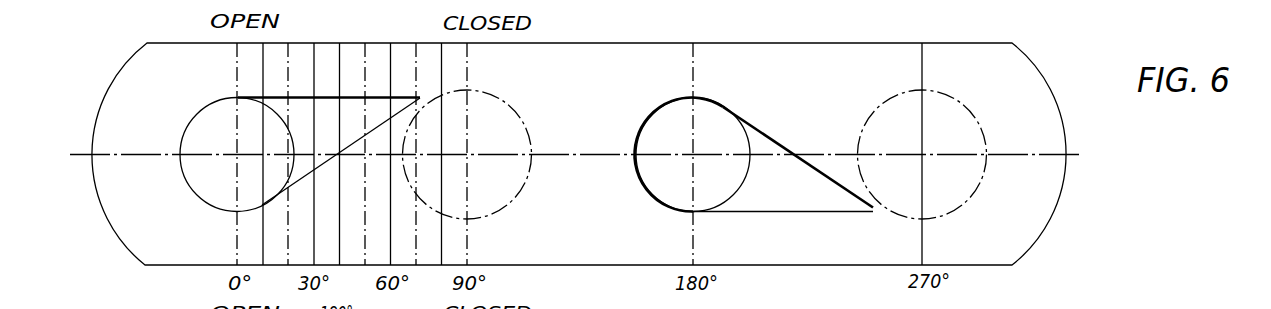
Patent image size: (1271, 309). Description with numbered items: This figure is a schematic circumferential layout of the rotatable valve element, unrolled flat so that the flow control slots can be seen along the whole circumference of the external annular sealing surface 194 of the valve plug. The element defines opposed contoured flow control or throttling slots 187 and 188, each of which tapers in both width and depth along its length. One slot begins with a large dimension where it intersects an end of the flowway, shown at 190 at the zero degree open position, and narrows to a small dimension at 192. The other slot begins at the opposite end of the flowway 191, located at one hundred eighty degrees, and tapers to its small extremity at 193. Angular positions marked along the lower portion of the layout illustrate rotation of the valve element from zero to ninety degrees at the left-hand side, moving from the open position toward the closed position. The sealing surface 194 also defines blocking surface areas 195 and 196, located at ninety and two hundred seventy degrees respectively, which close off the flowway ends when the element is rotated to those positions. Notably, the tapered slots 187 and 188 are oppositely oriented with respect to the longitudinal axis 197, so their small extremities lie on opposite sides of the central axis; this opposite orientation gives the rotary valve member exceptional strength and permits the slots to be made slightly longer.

The throttling slot 187 is at (326, 112).
The tapered flow control slot 188 is at (808, 193).
The large slot dimension at flowway end 190 is at (205, 115).
The opposite end of the flowway 191 is at (720, 118).
The small slot dimension 192 is at (420, 97).
The small slot dimension 193 is at (873, 208).
The external annular sealing surface 194 is at (653, 58).
The blocking surface area 195 is at (518, 123).
The blocking surface area 196 is at (942, 95).
The longitudinal axis 197 is at (582, 159).